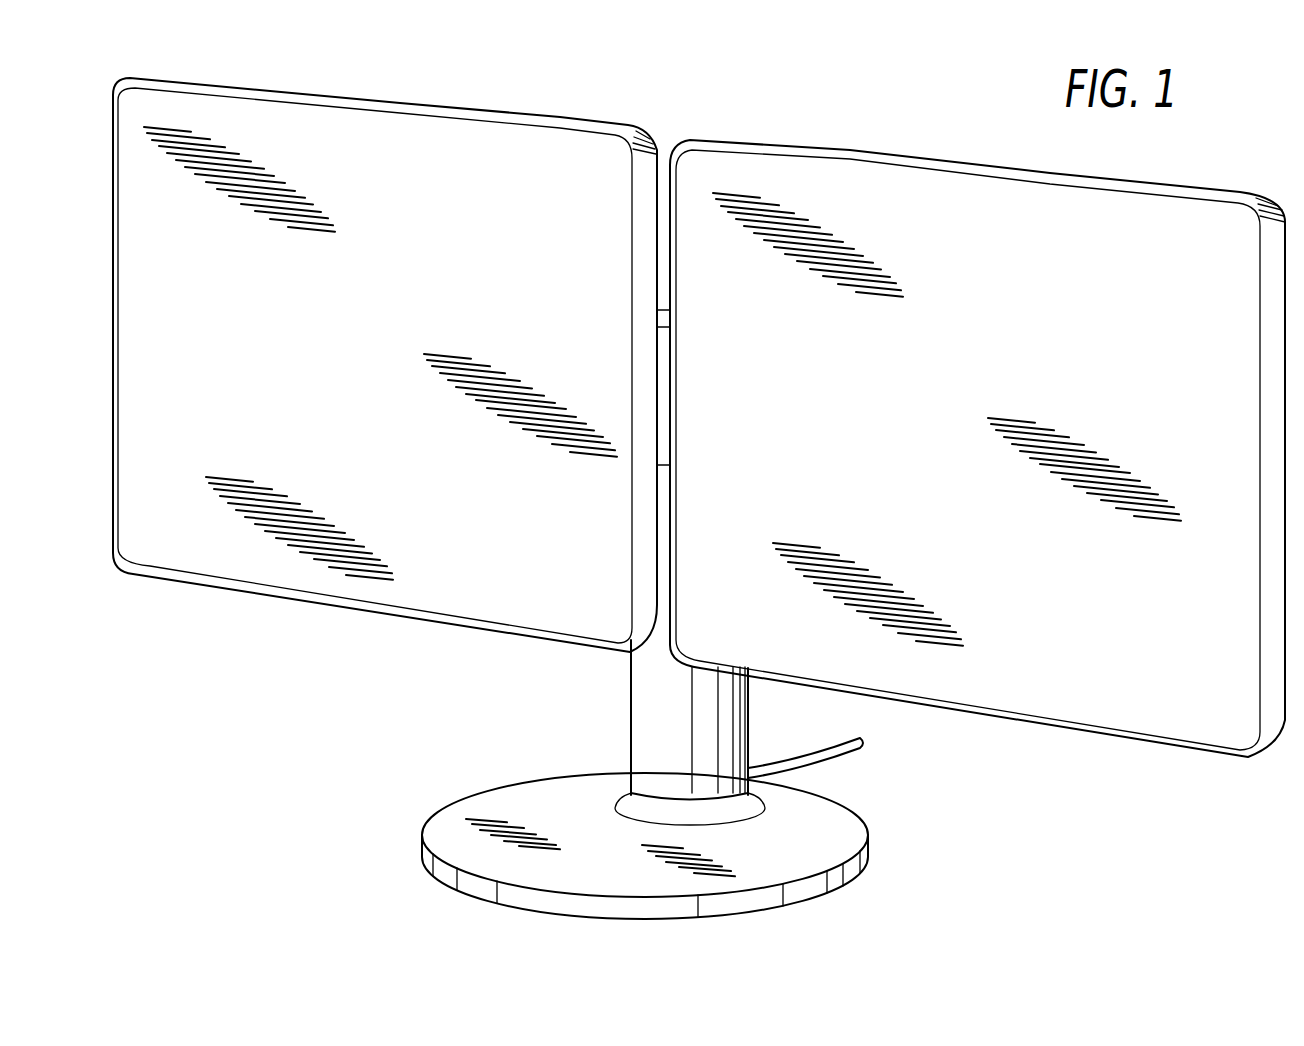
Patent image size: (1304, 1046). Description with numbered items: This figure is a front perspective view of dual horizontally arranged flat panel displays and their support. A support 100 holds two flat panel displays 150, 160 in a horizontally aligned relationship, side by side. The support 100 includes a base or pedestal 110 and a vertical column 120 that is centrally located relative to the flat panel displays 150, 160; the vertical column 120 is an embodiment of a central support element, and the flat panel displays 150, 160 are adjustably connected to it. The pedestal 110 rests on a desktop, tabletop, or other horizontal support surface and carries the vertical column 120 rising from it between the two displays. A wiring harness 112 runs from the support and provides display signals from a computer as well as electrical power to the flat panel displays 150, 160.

The support 100 is at (551, 695).
The base or pedestal 110 is at (483, 790).
The wiring harness 112 is at (778, 763).
The vertical column 120 is at (630, 718).
The flat panel display 150 is at (524, 113).
The flat panel display 160 is at (852, 150).